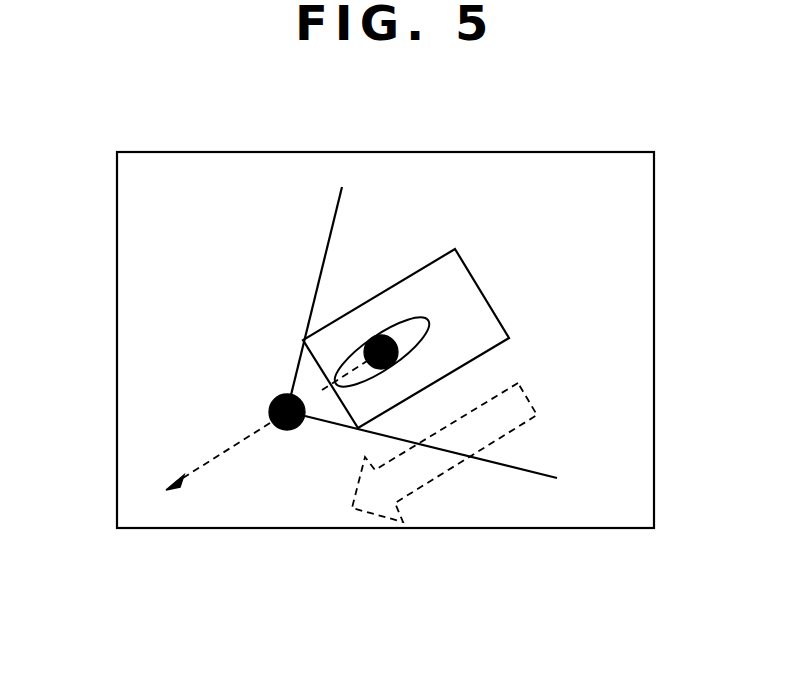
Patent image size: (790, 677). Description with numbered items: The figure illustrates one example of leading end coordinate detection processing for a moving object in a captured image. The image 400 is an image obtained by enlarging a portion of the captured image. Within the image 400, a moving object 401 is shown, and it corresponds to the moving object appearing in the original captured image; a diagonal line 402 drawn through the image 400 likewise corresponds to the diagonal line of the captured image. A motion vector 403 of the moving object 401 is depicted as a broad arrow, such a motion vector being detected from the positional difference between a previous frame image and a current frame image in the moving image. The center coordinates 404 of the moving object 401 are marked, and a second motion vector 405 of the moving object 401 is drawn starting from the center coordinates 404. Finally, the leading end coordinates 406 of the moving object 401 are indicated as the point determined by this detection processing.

The image 400 is at (208, 152).
The moving object 401 is at (490, 302).
The diagonal line 402 is at (335, 208).
The motion vector 403 is at (530, 403).
The center coordinates 404 is at (400, 336).
The motion vector 405 is at (232, 448).
The leading end coordinates 406 is at (287, 430).